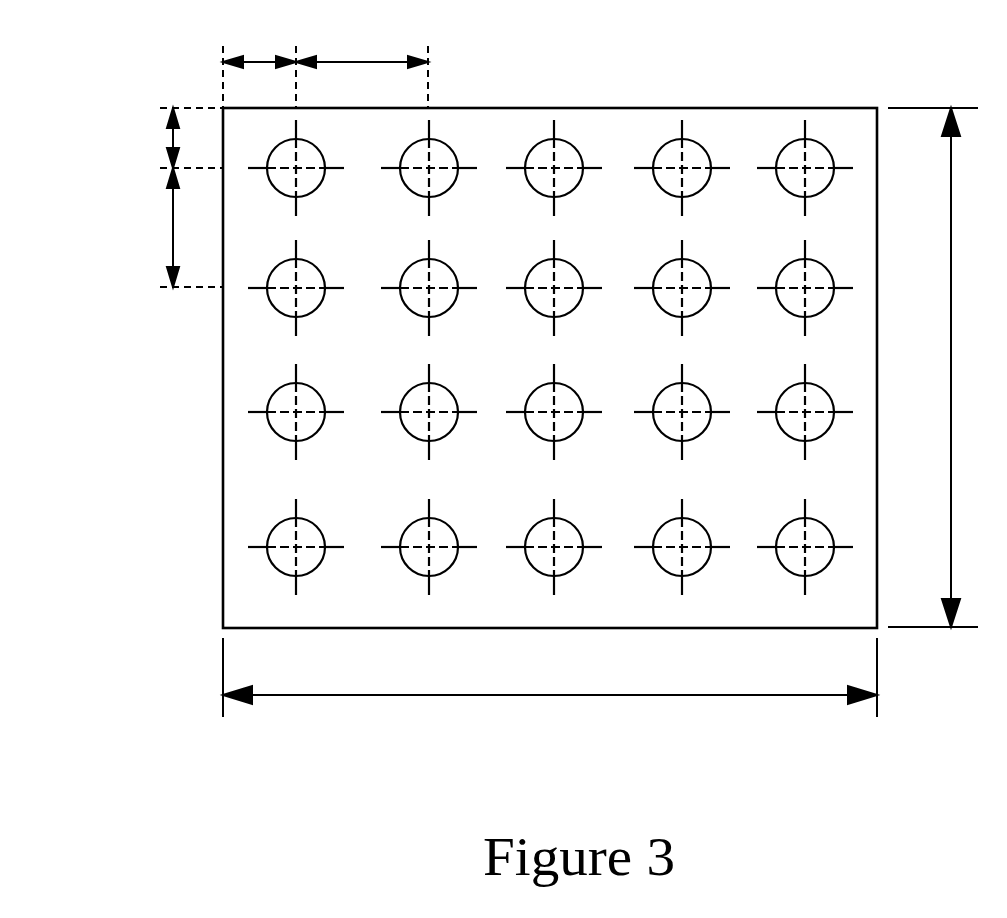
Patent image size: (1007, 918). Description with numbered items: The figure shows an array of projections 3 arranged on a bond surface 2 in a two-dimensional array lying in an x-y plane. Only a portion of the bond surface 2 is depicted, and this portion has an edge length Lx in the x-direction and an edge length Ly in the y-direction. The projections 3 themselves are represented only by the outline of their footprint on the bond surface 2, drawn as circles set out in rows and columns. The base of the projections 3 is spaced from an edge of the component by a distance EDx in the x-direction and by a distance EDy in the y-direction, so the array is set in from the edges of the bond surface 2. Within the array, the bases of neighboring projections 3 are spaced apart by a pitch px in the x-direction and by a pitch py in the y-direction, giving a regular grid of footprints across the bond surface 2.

The bond surface 2 is at (236, 456).
The projections 3 is at (575, 140).
The edge distance in x-direction EDx is at (259, 68).
The edge distance in y-direction EDy is at (164, 138).
The pitch in x-direction px is at (362, 68).
The pitch in y-direction py is at (180, 227).
The edge length in x-direction Lx is at (550, 688).
The edge length in y-direction Ly is at (944, 367).